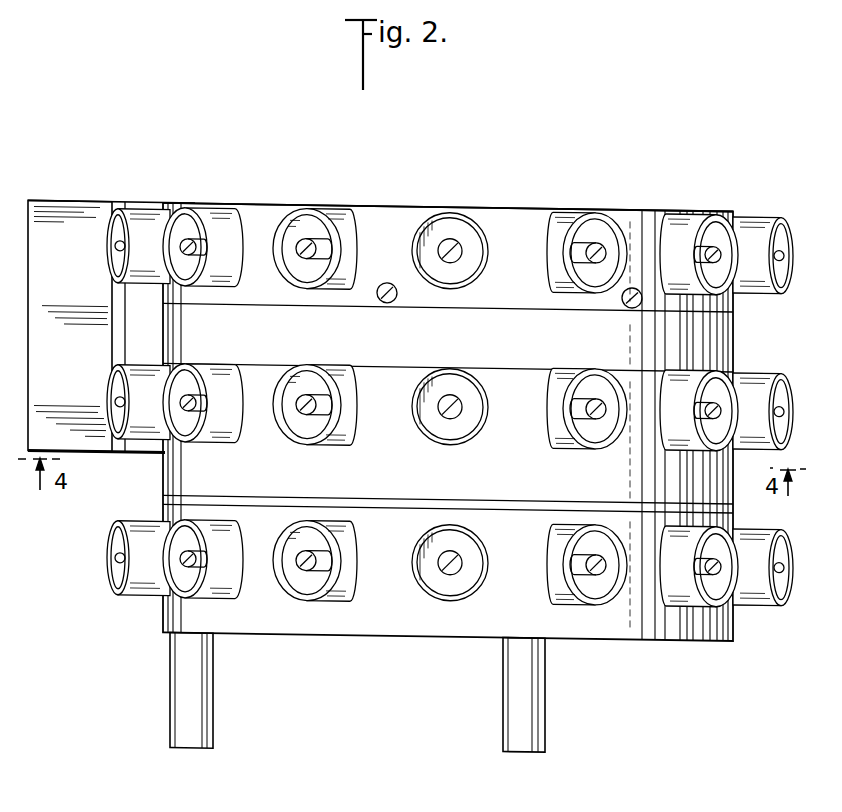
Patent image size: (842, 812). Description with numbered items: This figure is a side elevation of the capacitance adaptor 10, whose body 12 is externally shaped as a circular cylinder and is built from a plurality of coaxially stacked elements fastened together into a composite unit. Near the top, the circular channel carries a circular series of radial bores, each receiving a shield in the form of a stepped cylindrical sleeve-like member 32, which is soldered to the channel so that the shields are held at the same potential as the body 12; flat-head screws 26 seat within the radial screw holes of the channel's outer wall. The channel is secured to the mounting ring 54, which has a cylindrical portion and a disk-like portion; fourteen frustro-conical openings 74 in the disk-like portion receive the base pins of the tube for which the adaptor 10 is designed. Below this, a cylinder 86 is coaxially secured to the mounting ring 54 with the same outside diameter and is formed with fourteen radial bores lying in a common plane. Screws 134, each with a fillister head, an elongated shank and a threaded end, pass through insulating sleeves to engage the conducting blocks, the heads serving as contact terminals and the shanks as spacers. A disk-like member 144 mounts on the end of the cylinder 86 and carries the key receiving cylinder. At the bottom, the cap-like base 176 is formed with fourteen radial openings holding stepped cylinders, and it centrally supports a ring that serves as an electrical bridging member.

The capacitance adaptor 10 is at (431, 191).
The body 12 is at (520, 208).
The flat-head screws 26 is at (390, 283).
The stepped cylindrical sleeve-like member 32 is at (477, 279).
The mounting ring 54 is at (735, 337).
The openings 74 is at (461, 251).
The cylinder 86 is at (163, 472).
The screw 134 is at (310, 423).
The disk-like member 144 is at (163, 500).
The cap-like base 176 is at (163, 622).